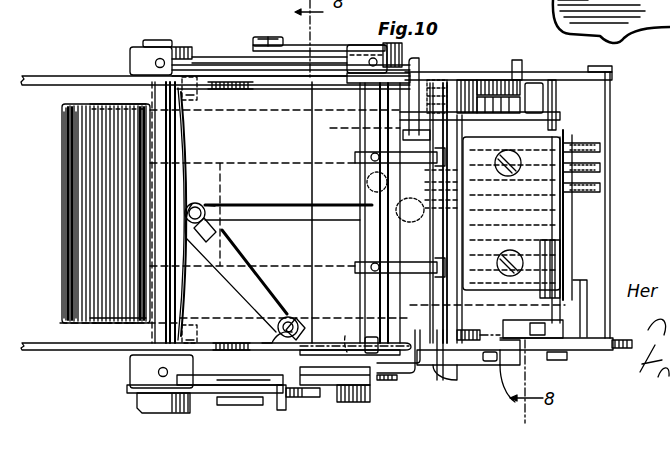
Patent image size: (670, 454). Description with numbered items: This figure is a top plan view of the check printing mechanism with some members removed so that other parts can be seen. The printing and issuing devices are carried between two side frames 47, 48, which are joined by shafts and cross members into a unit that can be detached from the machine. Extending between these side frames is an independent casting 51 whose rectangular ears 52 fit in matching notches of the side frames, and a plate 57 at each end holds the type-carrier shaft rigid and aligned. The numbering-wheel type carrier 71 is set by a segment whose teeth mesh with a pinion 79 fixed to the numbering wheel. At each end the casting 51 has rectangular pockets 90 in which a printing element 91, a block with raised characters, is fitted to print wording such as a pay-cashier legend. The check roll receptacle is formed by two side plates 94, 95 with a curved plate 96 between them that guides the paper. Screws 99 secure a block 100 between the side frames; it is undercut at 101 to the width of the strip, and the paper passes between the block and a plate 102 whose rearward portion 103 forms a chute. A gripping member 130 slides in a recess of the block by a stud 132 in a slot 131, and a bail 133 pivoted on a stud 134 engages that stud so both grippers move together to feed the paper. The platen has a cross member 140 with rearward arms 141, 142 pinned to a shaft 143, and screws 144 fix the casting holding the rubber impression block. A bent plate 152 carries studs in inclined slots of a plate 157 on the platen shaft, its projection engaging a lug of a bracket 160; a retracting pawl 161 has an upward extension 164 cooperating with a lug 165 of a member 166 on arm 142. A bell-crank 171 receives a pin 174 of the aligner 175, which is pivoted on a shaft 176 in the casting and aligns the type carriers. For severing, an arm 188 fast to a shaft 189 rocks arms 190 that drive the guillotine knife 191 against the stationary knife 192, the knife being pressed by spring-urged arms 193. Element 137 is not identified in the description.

The side frame 47 is at (78, 351).
The side frame 48 is at (65, 82).
The frame or casting 51 is at (596, 100).
The rectangularly formed ears 52 is at (600, 70).
The plate 57 is at (519, 62).
The type carrier (numbering wheel) 71 is at (400, 125).
The pinion 79 is at (470, 105).
The rectangular pockets 90 is at (535, 88).
The printing element 91 is at (562, 88).
The side plate 94 is at (82, 107).
The side plate 95 is at (93, 327).
The curved plate 96 is at (95, 185).
The screws 99 is at (198, 98).
The block (plate) 100 is at (251, 226).
The undercut 101 is at (265, 117).
The plate 102 is at (140, 110).
The rearwardly extending portion 103 is at (67, 243).
The gripping member 130 is at (222, 178).
The slot 131 is at (340, 208).
The stud 132 is at (201, 208).
The bail or yoked member 133 is at (246, 268).
The stud 134 is at (304, 324).
The stop 137 is at (253, 37).
The cross member 140 is at (560, 217).
The arm 141 is at (215, 59).
The arm 142 is at (412, 370).
The shaft 143 is at (162, 132).
The screws 144 is at (560, 145).
The bent plate 152 is at (340, 393).
The plate 157 is at (207, 394).
The bracket 160 is at (350, 336).
The retracting pawl 161 is at (322, 392).
The upward extension 164 is at (370, 398).
The lug 165 is at (280, 400).
The member 166 is at (245, 384).
The bell-crank 171 is at (432, 378).
The pin 174 is at (510, 402).
The aligner 175 is at (610, 298).
The shaft 176 is at (565, 353).
The arm 188 is at (329, 50).
The shaft 189 is at (365, 290).
The forwardly extending arms 190 is at (372, 263).
The slidable guillotine knife 191 is at (490, 222).
The stationary knife 192 is at (441, 378).
The arms 193 is at (490, 80).